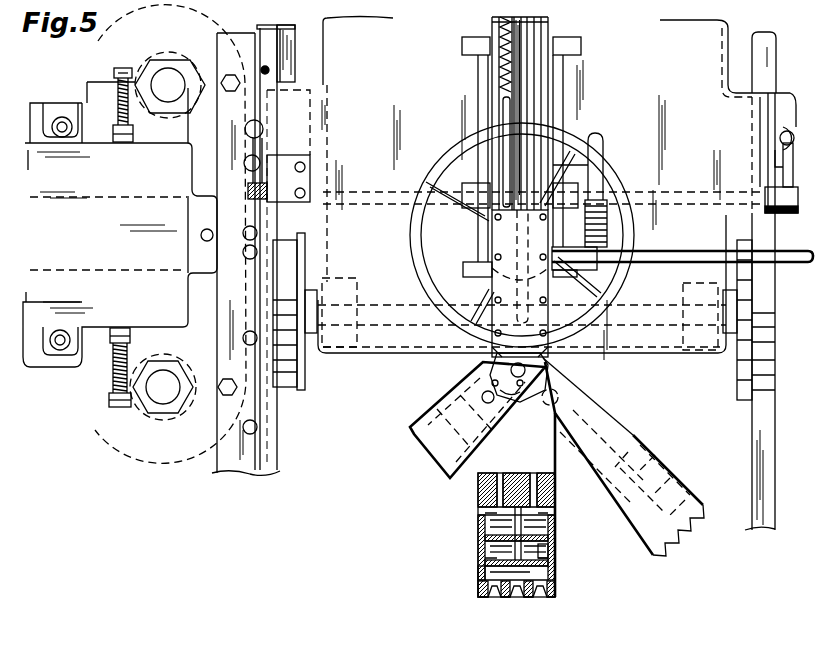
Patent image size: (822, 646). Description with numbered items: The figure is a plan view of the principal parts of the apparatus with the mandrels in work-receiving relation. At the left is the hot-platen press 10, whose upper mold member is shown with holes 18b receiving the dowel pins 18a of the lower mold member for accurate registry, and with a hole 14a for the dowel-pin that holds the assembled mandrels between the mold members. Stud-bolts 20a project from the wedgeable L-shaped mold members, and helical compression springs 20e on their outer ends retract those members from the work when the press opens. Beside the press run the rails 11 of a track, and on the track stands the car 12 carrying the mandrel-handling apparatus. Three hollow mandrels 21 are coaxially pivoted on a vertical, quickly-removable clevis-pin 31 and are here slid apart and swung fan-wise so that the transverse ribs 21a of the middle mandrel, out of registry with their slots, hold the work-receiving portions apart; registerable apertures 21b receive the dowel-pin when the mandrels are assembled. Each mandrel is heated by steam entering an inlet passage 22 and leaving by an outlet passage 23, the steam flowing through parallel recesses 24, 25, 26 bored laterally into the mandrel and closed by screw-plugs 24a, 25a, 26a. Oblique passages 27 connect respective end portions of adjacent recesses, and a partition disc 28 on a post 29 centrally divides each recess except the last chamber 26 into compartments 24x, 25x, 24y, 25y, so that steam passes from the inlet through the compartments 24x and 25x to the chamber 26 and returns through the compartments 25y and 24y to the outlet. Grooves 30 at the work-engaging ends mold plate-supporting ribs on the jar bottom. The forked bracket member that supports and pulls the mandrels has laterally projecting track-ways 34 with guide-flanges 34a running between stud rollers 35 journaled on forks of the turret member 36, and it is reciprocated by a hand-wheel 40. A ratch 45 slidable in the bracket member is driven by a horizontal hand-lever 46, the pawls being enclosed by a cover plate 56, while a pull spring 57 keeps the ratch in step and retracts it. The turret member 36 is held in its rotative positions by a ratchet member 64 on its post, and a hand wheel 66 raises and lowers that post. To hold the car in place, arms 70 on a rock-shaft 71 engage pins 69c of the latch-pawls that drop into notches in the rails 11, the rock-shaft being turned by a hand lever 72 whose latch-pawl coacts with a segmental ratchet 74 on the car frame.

The hot-platen press 10 is at (147, 463).
The rails 11 is at (277, 448).
The car 12 is at (546, 189).
The hole 14a is at (203, 240).
The dowel pins 18a is at (63, 120).
The holes 18b is at (62, 134).
The stud-bolts 20a is at (125, 68).
The helical compression springs 20e is at (118, 114).
The mandrels 21 is at (438, 448).
The transverse ribs 21a is at (518, 447).
The registerable apertures 21b is at (481, 395).
The steam inlet passage 22 is at (540, 490).
The outlet passage 23 is at (500, 490).
The recess 24 is at (555, 505).
The screw-plug 24a is at (485, 515).
The compartment 24x is at (555, 527).
The compartment 24y is at (497, 522).
The recess 25 is at (558, 540).
The screw-plug 25a is at (562, 548).
The compartment 25x is at (558, 565).
The compartment 25y is at (485, 553).
The recess 26 is at (540, 575).
The screw-plug 26a is at (478, 573).
The passages 27 is at (487, 532).
The partition disc 28 is at (487, 508).
The post 29 is at (537, 513).
The grooves 30 is at (492, 598).
The clevis-pin 31 is at (510, 368).
The track-ways 34 is at (492, 110).
The guide-flanges 34a is at (500, 72).
The stud rollers 35 is at (490, 60).
The turret member 36 is at (563, 167).
The hand-wheel 40 is at (598, 143).
The ratch 45 is at (507, 187).
The hand-lever 46 is at (663, 260).
The cover plate 56 is at (502, 240).
The pull spring 57 is at (510, 13).
The ratchet member 64 is at (473, 228).
The hand wheel 66 is at (612, 294).
The pin 69c is at (263, 126).
The arms 70 is at (265, 160).
The rock-shaft 71 is at (380, 192).
The hand lever 72 is at (250, 187).
The segmental ratchet 74 is at (270, 167).